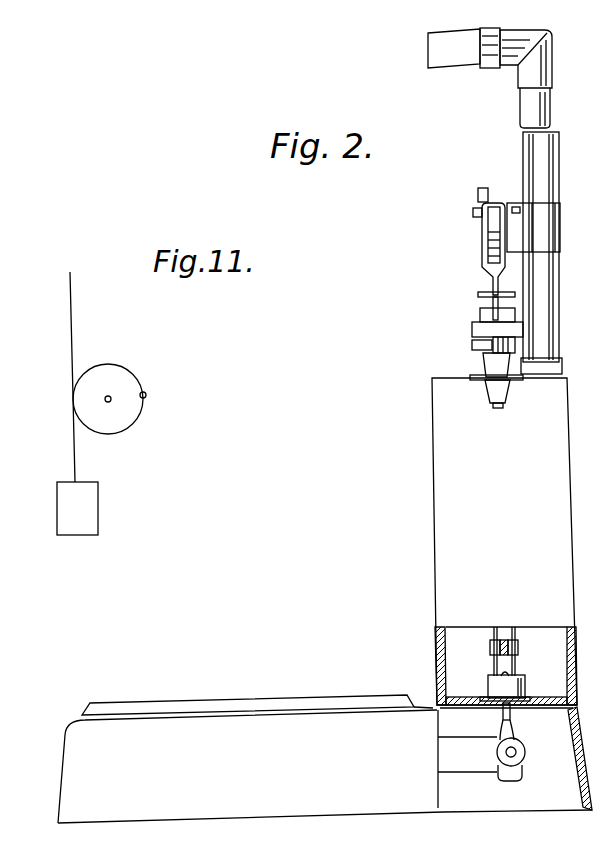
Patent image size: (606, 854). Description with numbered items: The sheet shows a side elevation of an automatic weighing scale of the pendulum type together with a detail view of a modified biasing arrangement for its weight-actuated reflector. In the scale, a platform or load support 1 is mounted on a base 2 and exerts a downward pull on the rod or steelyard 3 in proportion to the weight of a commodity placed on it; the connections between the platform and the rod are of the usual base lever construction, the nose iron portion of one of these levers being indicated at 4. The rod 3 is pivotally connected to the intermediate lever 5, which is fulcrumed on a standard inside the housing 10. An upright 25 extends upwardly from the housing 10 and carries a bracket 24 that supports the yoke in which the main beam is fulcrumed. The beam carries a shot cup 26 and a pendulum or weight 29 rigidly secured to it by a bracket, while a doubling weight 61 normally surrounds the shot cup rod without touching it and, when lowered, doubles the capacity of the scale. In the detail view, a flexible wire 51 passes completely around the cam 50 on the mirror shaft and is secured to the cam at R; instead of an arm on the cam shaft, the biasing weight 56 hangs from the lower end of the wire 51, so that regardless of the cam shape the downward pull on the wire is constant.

In FIG. 2, the platform or load support 1 is at (335, 702).
In FIG. 2, the base 2 is at (325, 765).
In FIG. 2, the rod or steelyard 3 is at (512, 715).
In FIG. 2, the nose iron portion 4 is at (505, 755).
In FIG. 2, the intermediate lever 5 is at (518, 648).
In FIG. 2, the housing 10 is at (445, 552).
In FIG. 2, the bracket 24 is at (513, 225).
In FIG. 2, the upright 25 is at (521, 148).
In FIG. 2, the shot cup 26 is at (487, 362).
In FIG. 2, the pendulum or weight 29 is at (478, 312).
In FIG. 2, the doubling weight 61 is at (472, 328).
In FIG. 11, the cam 50 is at (130, 370).
In FIG. 11, the flexible wire 51 is at (75, 322).
In FIG. 11, the weight 56 is at (77, 508).
In FIG. 11, the securing point R is at (146, 394).